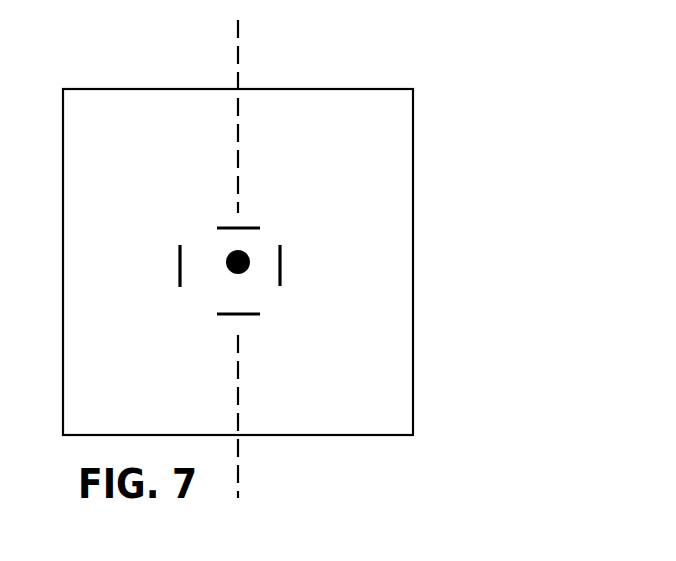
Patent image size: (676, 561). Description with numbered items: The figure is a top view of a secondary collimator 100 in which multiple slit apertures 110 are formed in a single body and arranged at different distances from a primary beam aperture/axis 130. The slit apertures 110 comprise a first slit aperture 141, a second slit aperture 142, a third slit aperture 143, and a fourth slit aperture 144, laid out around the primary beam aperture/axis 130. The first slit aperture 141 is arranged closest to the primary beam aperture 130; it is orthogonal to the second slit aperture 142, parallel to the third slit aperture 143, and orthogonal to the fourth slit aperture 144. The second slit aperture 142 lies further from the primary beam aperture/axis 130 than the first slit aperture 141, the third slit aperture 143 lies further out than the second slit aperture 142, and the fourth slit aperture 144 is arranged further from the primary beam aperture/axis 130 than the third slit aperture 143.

The secondary collimator 100 is at (342, 89).
The slit apertures 110 is at (265, 332).
The primary beam aperture/axis 130 is at (246, 252).
The first slit aperture 141 is at (226, 227).
The second slit aperture 142 is at (281, 265).
The third slit aperture 143 is at (228, 317).
The fourth slit aperture 144 is at (179, 265).